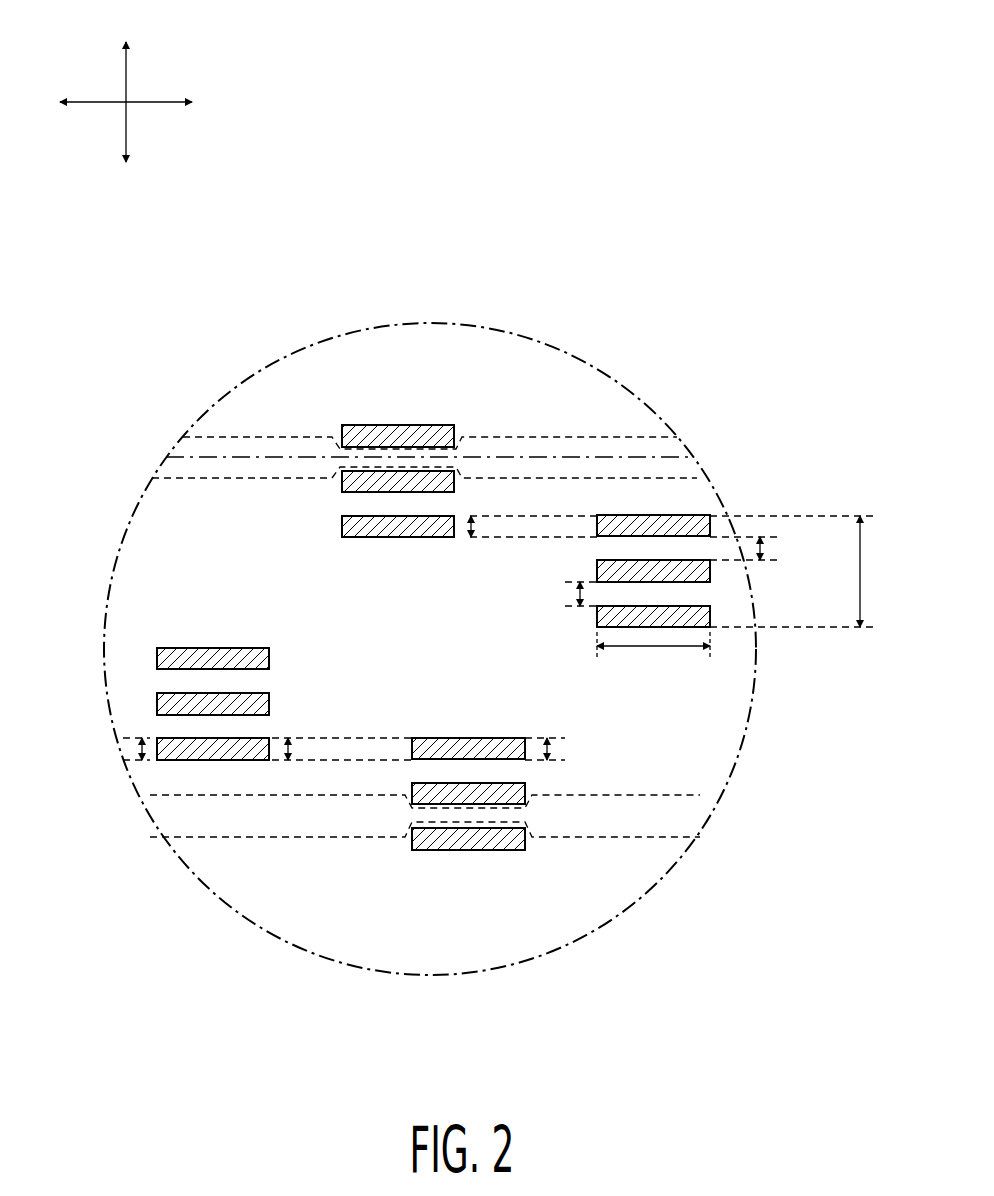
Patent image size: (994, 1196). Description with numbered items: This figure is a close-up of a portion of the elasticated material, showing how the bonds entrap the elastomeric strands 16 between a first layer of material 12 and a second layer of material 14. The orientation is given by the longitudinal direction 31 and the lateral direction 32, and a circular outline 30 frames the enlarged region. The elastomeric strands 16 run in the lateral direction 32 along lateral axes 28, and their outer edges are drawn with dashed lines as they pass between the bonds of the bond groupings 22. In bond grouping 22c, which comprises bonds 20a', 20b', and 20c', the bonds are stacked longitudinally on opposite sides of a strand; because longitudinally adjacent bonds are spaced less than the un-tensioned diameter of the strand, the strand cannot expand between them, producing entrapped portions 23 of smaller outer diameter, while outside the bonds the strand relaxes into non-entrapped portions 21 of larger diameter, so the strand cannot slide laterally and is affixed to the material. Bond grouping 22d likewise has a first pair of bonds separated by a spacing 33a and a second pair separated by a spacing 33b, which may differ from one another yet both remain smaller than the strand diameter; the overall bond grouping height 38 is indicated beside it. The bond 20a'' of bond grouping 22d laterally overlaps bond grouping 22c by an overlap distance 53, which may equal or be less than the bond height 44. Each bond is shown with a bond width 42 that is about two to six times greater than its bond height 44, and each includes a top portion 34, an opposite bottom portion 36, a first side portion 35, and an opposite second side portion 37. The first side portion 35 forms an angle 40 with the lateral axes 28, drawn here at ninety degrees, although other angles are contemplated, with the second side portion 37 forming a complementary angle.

The first layer of material 12 is at (720, 697).
The second layer of material 14 is at (708, 750).
The elastomeric strands 16 is at (196, 480).
The bond 20a' is at (398, 399).
The bond 20a'' is at (679, 459).
The bond 20b' is at (340, 500).
The bond 20c' is at (398, 568).
The non-entrapped portions 21 is at (262, 452).
The bond groupings 22 is at (360, 540).
The bond grouping 22c is at (460, 424).
The bond grouping 22d is at (718, 514).
The entrapped portions 23 is at (413, 445).
The lateral axes 28 is at (222, 457).
The circular outline 30 is at (362, 327).
The longitudinal direction 31 is at (126, 72).
The lateral direction 32 is at (155, 103).
The spacing 33a is at (762, 548).
The spacing 33b is at (578, 594).
The top portion 34 is at (185, 648).
The first side portion 35 is at (269, 658).
The bottom portion 36 is at (190, 669).
The second side portion 37 is at (157, 657).
The bond grouping height 38 is at (861, 568).
The angle 40 is at (528, 798).
The bond width 42 is at (655, 647).
The bond height 44 is at (140, 750).
The overlap distance 53 is at (476, 527).